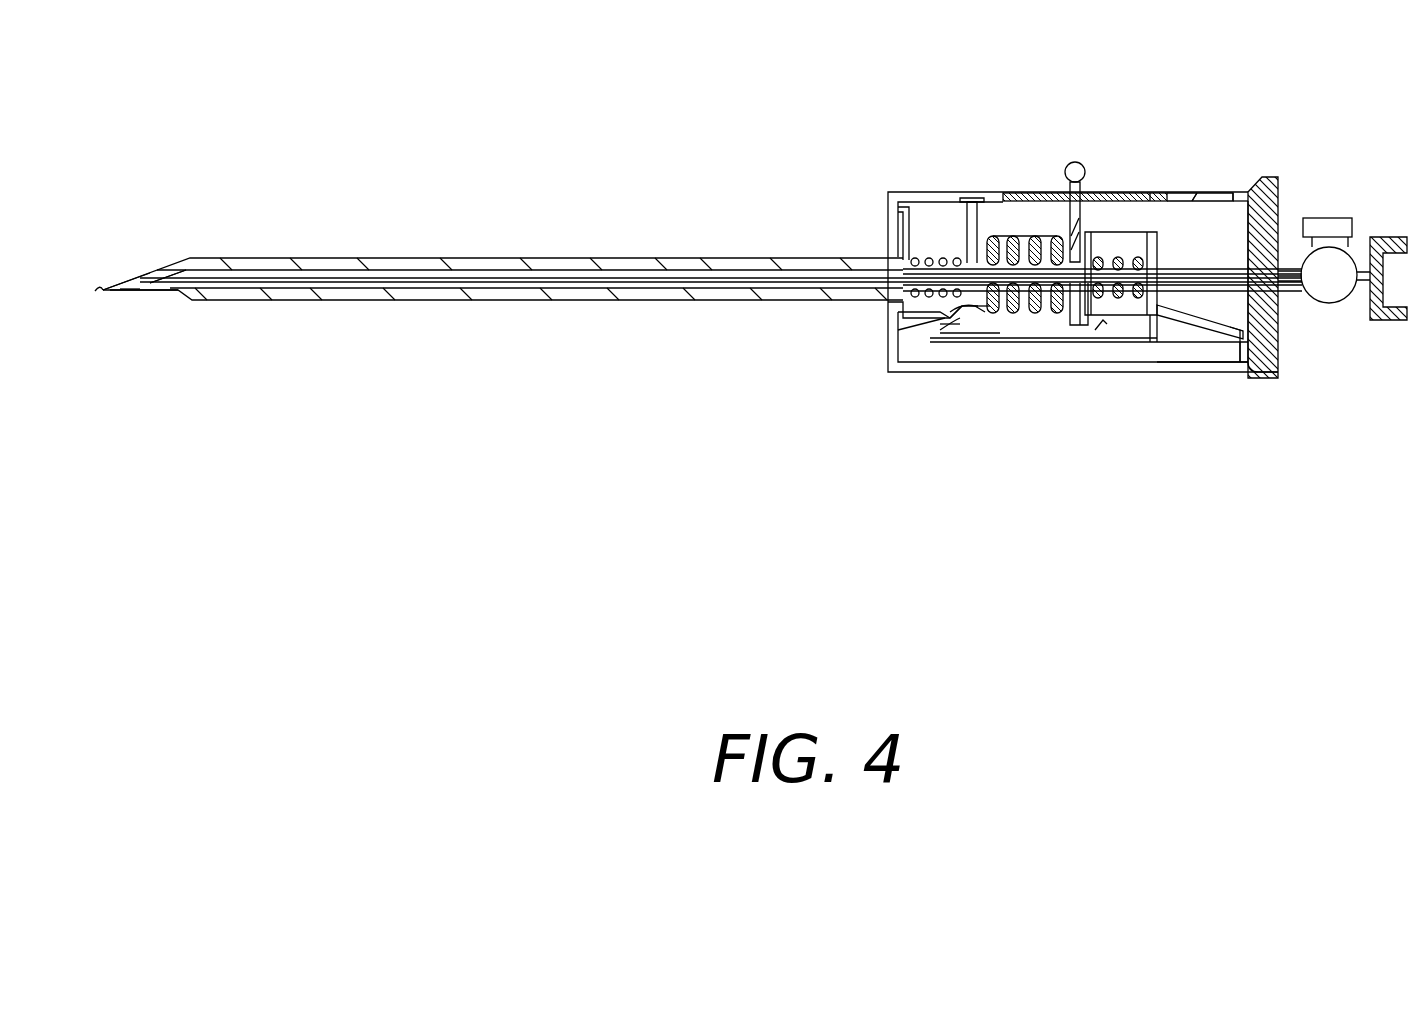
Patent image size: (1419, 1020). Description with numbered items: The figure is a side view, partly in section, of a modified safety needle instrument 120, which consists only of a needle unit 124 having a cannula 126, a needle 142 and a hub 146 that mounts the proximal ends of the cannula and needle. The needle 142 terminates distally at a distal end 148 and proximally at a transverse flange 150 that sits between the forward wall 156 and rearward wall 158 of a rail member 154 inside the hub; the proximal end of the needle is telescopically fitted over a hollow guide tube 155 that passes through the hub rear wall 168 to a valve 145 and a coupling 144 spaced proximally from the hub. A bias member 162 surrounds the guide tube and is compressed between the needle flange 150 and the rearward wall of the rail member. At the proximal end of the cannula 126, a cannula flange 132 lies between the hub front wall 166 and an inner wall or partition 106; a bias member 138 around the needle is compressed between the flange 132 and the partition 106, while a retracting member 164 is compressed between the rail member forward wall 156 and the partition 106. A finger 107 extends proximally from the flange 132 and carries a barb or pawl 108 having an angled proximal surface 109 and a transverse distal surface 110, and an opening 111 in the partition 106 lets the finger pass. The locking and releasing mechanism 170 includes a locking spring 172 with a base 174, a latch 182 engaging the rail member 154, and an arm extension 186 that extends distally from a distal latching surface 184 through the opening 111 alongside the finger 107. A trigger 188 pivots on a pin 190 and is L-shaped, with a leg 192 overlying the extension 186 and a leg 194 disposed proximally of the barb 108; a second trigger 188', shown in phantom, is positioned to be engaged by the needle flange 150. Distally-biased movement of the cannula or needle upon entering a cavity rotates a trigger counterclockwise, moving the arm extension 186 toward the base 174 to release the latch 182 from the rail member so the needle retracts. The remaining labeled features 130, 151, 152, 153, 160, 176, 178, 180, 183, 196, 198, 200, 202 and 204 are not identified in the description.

The inner wall or partition 106 is at (975, 197).
The finger 107 is at (905, 322).
The barb or pawl 108 is at (933, 326).
The angled proximal surface 109 is at (945, 338).
The transverse distal surface 110 is at (940, 333).
The opening or gap 111 is at (900, 316).
The safety needle instrument 120 is at (791, 168).
The needle unit 124 is at (1307, 400).
The cannula 126 is at (400, 255).
The cannula 130 is at (172, 262).
The cannula flange 132 is at (913, 232).
The bias member 138 is at (937, 255).
The needle 142 is at (478, 255).
The coupling 144 is at (1392, 236).
The valve 145 is at (1332, 217).
The hub 146 is at (1290, 172).
The distal end 148 is at (141, 296).
The transverse flange 150 is at (1103, 191).
The cannula tip 151 is at (148, 284).
The cannula bevel 152 is at (160, 268).
The stylet tip 153 is at (98, 292).
The rail member 154 is at (1162, 230).
The hollow guide tube 155 is at (1250, 191).
The forward wall 156 is at (1050, 236).
The rearward wall 158 is at (1159, 257).
The slide rod 160 is at (1130, 191).
The bias member 162 is at (1151, 191).
The retracting member 164 is at (999, 233).
The hub front wall 166 is at (892, 236).
The rear wall 168 is at (1250, 348).
The locking and releasing mechanism 170 is at (1190, 366).
The locking spring 172 is at (1234, 366).
The base 174 is at (1076, 345).
The housing corner 176 is at (1262, 388).
The bottom edge 178 is at (1262, 370).
The cavity 180 is at (1219, 342).
The latch 182 is at (1166, 304).
The latch tip 183 is at (1250, 332).
The distal latching surface 184 is at (1170, 347).
The arm extension 186 is at (1055, 345).
The trigger 188 is at (1009, 369).
The second trigger 188' is at (1123, 387).
The pin 190 is at (961, 328).
The leg 192 is at (955, 342).
The leg 194 is at (976, 332).
The guide slot 196 is at (1239, 191).
The plunger stem 198 is at (1068, 232).
The rod end 200 is at (1164, 191).
The plunger knob 202 is at (1078, 161).
The stop 204 is at (1199, 191).